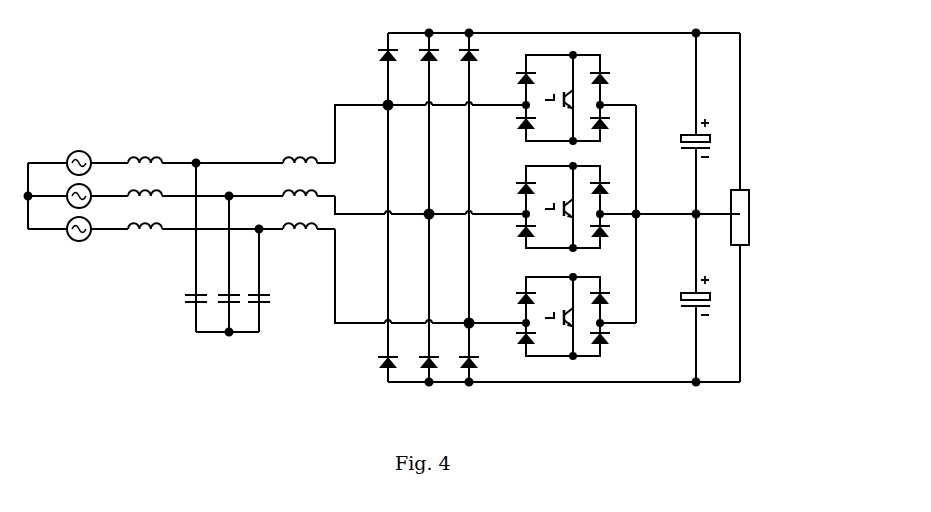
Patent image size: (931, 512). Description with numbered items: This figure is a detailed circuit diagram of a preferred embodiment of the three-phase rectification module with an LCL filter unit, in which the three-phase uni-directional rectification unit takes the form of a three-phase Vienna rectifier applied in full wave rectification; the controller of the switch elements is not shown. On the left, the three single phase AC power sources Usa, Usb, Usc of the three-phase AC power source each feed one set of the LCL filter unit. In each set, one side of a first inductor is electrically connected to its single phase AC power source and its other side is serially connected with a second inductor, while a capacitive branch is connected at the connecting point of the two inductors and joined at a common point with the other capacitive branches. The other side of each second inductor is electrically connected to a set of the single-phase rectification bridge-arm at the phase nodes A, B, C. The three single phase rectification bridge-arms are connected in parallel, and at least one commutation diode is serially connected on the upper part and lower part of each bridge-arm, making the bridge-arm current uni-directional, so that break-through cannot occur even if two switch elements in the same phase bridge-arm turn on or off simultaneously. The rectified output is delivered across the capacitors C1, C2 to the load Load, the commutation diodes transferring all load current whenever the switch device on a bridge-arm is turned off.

The single phase AC power source Usa is at (59, 159).
The single phase AC power source Usb is at (59, 193).
The single phase AC power source Usc is at (59, 227).
The single-phase rectification bridge-arm A is at (378, 97).
The single-phase rectification bridge-arm B is at (422, 207).
The single-phase rectification bridge-arm C is at (463, 316).
The capacitor C1 is at (690, 123).
The capacitor C2 is at (688, 298).
The load Load is at (762, 207).